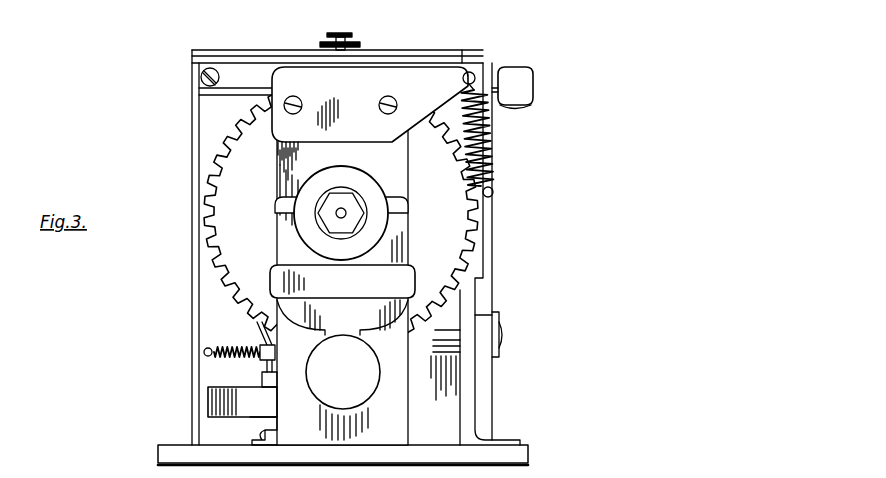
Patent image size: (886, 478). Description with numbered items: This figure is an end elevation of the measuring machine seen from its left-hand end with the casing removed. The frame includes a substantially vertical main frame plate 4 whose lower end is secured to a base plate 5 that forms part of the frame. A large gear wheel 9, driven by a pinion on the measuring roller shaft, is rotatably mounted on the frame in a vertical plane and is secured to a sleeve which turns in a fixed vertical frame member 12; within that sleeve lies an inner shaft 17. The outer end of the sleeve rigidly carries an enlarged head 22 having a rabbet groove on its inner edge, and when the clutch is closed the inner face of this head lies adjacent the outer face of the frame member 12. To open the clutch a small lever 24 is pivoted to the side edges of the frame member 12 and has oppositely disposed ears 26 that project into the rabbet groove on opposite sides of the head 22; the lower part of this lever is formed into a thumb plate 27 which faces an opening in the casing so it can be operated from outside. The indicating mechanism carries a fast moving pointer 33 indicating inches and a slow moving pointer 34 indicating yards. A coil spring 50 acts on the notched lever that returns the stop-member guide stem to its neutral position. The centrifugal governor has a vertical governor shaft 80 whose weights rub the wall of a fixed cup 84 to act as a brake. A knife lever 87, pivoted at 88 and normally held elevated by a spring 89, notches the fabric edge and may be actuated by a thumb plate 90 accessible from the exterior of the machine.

The main frame plate 4 is at (337, 247).
The base plate 5 is at (343, 455).
The large gear wheel 9 is at (341, 213).
The frame member 12 is at (342, 270).
The inner shaft 17 is at (341, 216).
The enlarged head 22 is at (318, 190).
The lever 24 is at (415, 262).
The ears 26 is at (388, 196).
The thumb plate 27 is at (343, 372).
The fast moving pointer 33 is at (352, 33).
The slow moving pointer 34 is at (360, 45).
The coil spring 50 is at (236, 345).
The governor shaft 80 is at (262, 361).
The fixed cup 84 is at (242, 416).
The knife lever 87 is at (480, 271).
The pivot 88 is at (445, 357).
The spring 89 is at (490, 162).
The thumb plate 90 is at (527, 90).